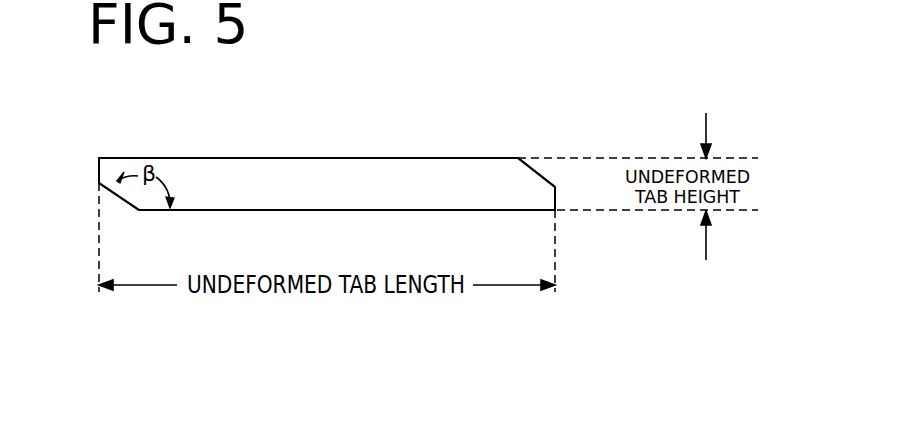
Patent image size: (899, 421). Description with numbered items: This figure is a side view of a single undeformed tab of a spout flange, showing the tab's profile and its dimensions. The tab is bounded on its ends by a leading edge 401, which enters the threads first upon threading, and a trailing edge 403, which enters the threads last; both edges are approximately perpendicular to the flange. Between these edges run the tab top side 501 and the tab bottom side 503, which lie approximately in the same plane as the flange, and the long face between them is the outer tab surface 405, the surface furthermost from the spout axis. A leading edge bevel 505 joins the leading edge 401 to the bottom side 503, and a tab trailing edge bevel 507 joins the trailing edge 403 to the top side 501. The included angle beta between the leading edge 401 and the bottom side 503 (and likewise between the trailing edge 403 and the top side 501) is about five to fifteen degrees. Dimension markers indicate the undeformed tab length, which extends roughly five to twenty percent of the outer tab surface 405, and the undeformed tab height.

The leading edge 401 is at (98, 172).
The trailing edge 403 is at (556, 200).
The outer tab surface 405 is at (353, 192).
The tab top side 501 is at (227, 157).
The tab bottom side 503 is at (377, 210).
The leading edge bevel 505 is at (116, 197).
The tab trailing edge bevel 507 is at (540, 167).